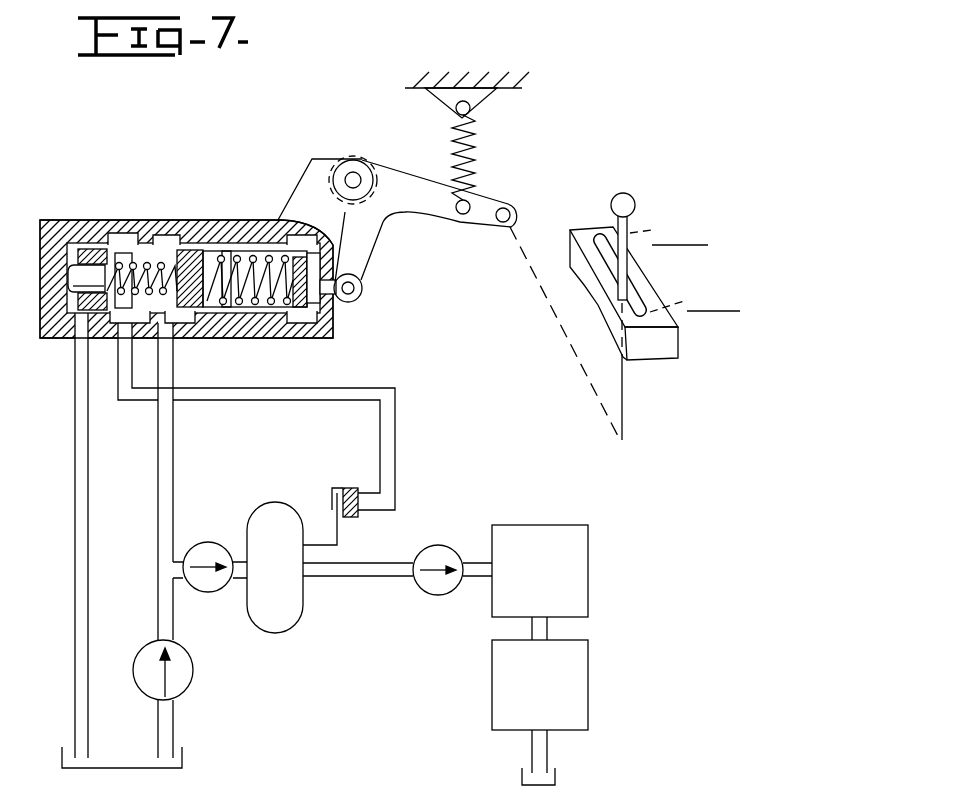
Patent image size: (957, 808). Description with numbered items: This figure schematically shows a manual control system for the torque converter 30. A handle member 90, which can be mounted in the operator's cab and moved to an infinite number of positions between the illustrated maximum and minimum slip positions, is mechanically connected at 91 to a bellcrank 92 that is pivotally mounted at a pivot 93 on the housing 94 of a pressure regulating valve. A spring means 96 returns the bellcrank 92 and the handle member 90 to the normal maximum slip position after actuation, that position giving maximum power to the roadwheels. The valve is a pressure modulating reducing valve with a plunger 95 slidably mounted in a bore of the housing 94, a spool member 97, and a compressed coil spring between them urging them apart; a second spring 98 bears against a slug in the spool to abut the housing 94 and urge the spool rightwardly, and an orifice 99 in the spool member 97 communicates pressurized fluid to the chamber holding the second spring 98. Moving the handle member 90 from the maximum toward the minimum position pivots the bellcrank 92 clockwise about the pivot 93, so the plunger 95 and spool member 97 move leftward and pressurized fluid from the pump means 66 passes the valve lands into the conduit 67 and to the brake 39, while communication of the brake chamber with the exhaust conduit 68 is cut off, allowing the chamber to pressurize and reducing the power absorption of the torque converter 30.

The housing 94 is at (53, 224).
The orifice 99 is at (120, 250).
The second spring 98 is at (162, 272).
The spool member 97 is at (202, 337).
The plunger 95 is at (270, 308).
The pivot 93 is at (351, 160).
The bellcrank 92 is at (440, 210).
The spring means 96 is at (475, 143).
The mechanical connection 91 is at (562, 332).
The handle member 90 is at (622, 197).
The exhaust conduit 68 is at (75, 555).
The conduit 67 is at (217, 397).
The pump means 66 is at (183, 675).
The torque converter 30 is at (257, 582).
The brake 39 is at (339, 487).